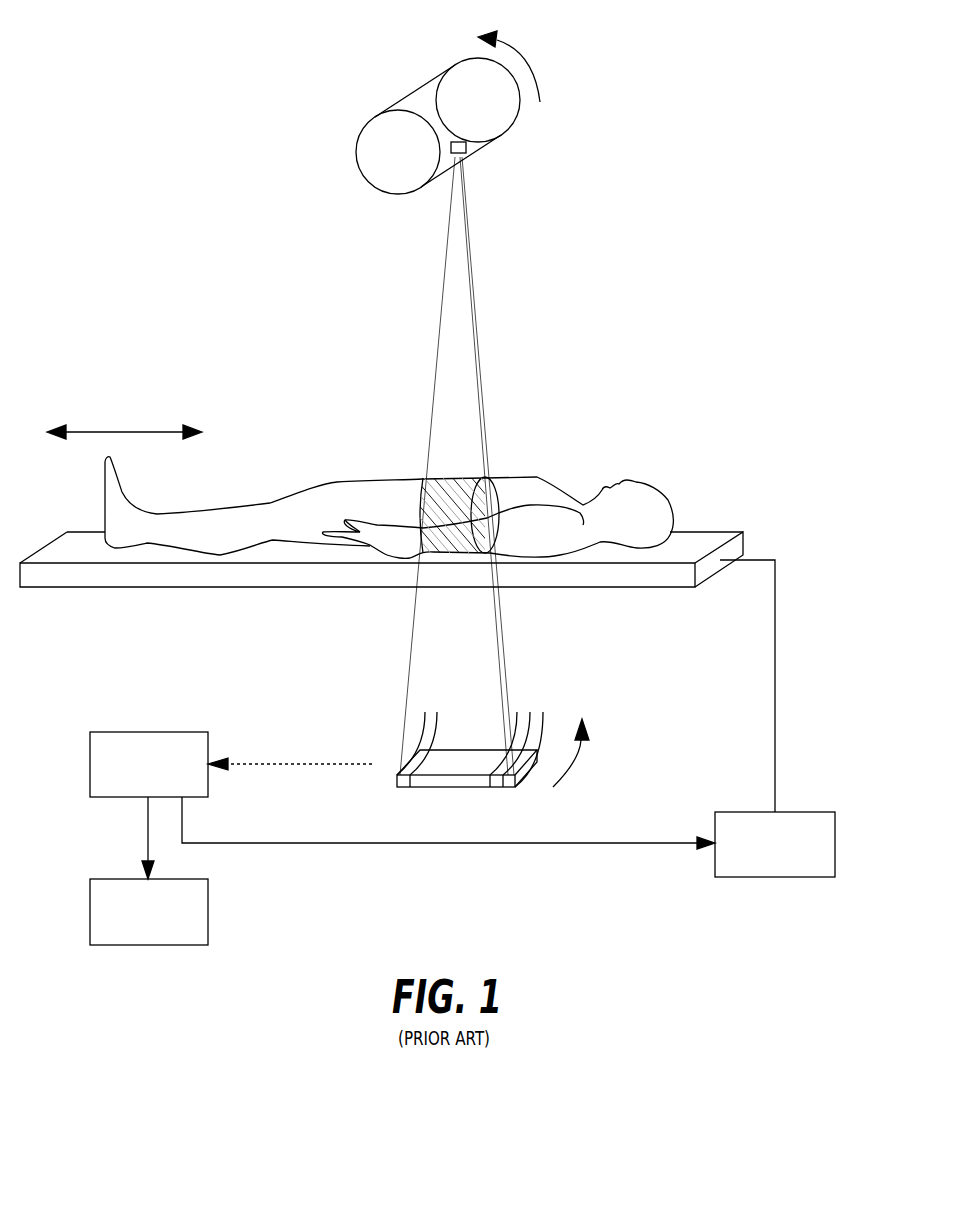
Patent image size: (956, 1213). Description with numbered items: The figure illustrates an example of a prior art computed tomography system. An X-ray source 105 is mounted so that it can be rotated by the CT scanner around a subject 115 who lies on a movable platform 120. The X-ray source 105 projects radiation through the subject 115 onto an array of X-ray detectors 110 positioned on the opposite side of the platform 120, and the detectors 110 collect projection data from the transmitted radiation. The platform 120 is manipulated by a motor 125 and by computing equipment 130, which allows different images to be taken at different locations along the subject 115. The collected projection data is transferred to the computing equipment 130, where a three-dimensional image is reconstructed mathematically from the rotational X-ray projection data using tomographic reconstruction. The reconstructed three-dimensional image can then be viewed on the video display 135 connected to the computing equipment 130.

The X-ray source 105 is at (353, 151).
The array of X-ray detectors 110 is at (455, 789).
The subject 115 is at (531, 478).
The movable platform 120 is at (202, 585).
The motor 125 is at (838, 845).
The computing equipment 130 is at (88, 764).
The video display 135 is at (88, 912).